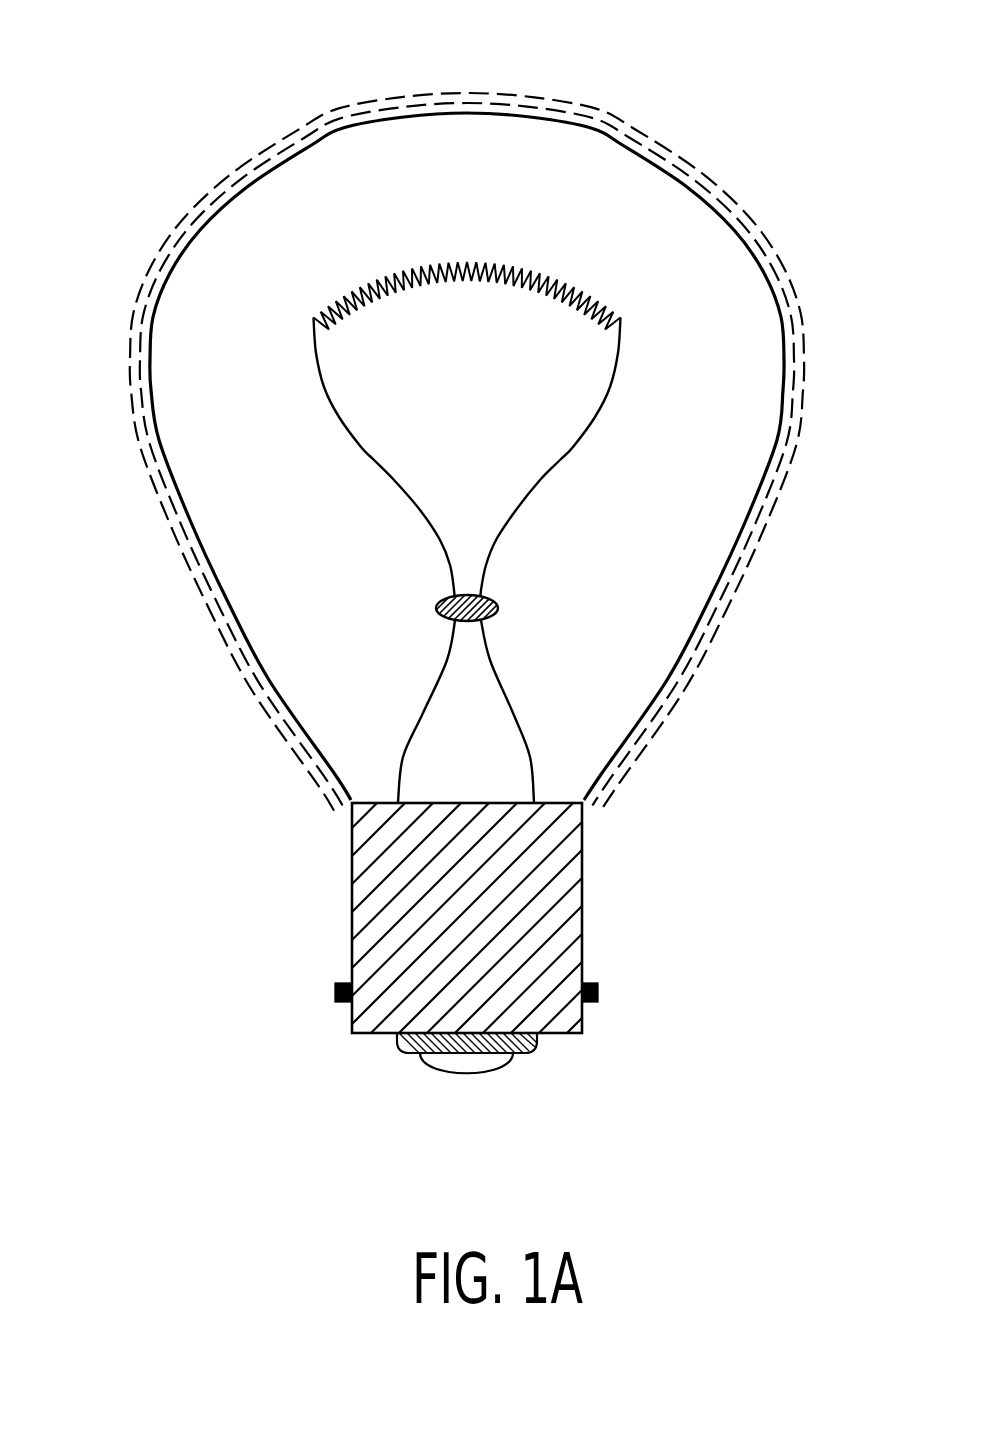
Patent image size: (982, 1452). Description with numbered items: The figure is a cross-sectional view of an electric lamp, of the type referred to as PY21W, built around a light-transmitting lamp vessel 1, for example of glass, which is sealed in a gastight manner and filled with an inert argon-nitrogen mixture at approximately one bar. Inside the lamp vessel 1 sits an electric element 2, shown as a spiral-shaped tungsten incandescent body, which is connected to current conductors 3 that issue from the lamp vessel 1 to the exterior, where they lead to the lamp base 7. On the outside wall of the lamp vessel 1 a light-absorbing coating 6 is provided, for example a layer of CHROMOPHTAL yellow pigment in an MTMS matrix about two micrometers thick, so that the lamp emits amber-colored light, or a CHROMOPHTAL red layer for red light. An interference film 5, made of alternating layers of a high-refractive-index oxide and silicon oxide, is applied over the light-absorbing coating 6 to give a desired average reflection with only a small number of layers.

The lamp vessel 1 is at (583, 128).
The electric element 2 is at (492, 268).
The current conductors 3 is at (368, 457).
The interference film 5 is at (475, 92).
The light-absorbing coating 6 is at (392, 100).
The base 7 is at (558, 910).